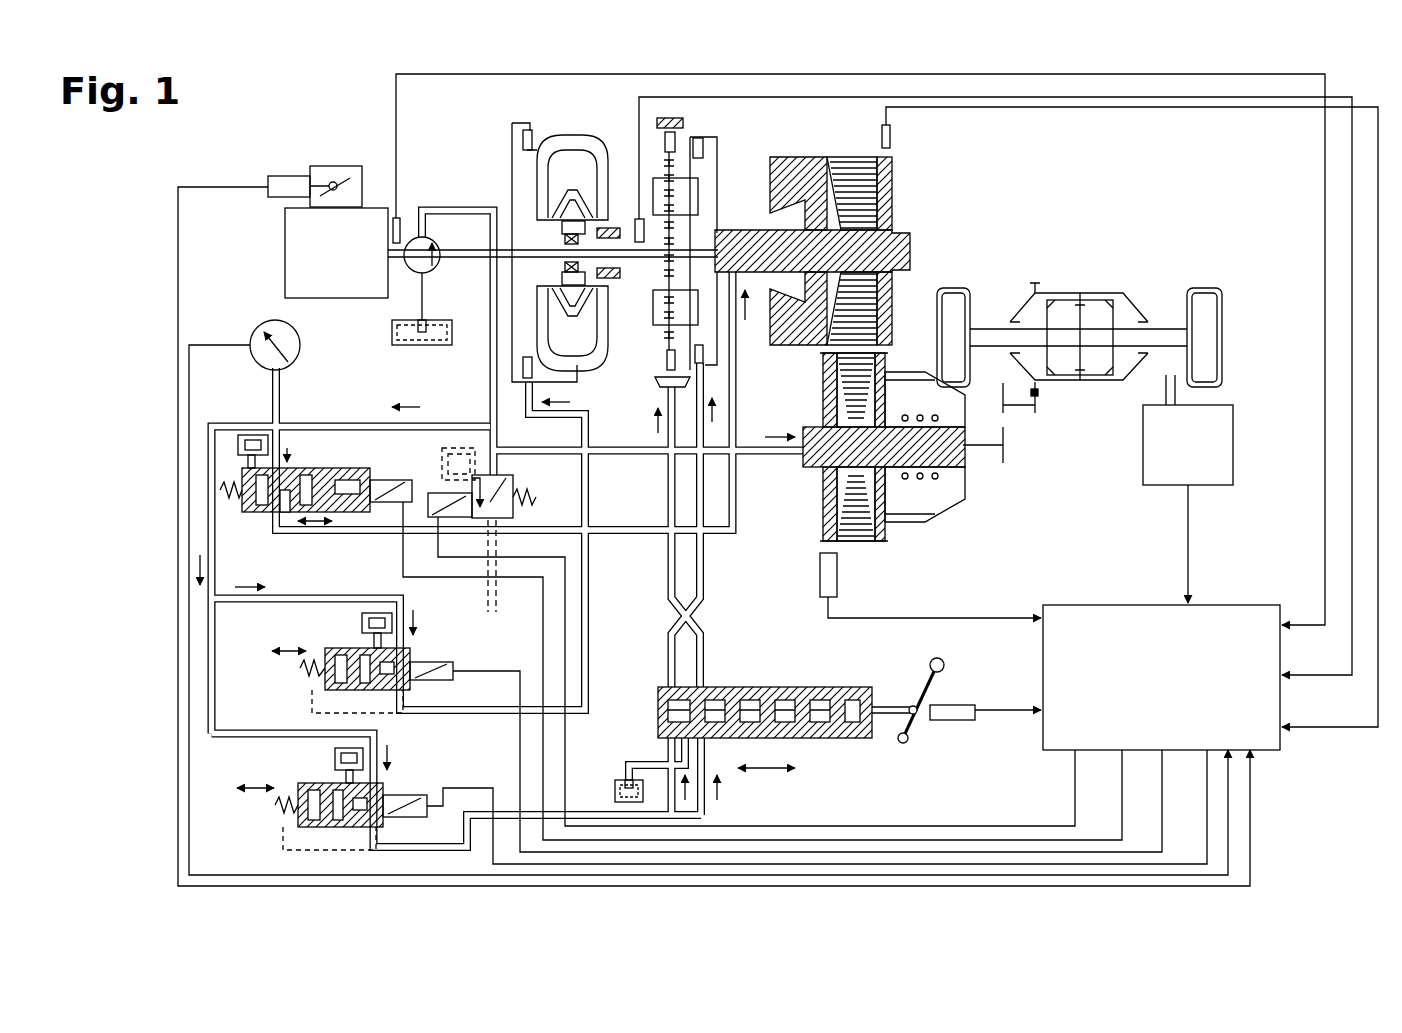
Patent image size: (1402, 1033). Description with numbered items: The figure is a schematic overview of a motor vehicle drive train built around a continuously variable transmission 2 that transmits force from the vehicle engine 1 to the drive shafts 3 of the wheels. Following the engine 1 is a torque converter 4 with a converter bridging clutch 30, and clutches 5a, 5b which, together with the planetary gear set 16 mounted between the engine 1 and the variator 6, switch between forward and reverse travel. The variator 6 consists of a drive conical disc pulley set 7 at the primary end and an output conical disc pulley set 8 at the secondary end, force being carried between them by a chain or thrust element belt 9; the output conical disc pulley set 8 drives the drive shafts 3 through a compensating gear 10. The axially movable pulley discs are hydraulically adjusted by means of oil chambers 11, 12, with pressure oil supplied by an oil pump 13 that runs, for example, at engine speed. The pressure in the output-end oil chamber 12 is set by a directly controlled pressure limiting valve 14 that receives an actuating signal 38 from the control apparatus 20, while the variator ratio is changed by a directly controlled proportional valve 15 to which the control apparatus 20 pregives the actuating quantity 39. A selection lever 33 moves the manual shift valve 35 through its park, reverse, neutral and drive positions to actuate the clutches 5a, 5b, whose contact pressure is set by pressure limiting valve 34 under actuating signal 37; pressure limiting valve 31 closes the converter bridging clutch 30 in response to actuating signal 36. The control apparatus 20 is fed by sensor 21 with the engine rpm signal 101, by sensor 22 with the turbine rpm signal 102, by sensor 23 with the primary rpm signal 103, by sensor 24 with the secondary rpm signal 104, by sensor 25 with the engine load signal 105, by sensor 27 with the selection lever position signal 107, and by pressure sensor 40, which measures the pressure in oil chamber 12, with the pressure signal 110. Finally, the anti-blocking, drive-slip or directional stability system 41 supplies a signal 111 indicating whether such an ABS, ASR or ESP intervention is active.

The vehicle engine 1 is at (312, 245).
The continuously variable transmission 2 is at (995, 210).
The drive shafts 3 is at (990, 330).
The torque converter 4 is at (600, 374).
The clutch 5a is at (704, 155).
The clutch 5b is at (676, 136).
The variator 6 is at (858, 366).
The drive conical disc pulley set 7 is at (895, 232).
The output conical disc pulley set 8 is at (874, 378).
The chain or thrust element belt 9 is at (853, 510).
The compensating gear 10 is at (1050, 398).
The oil chamber 11 is at (790, 212).
The oil chamber 12 is at (932, 508).
The oil pump 13 is at (430, 276).
The pressure limiting valve 14 is at (520, 477).
The proportional valve 15 is at (260, 513).
The planetary gear set 16 is at (645, 320).
The control apparatus 20 is at (1170, 612).
The sensor 21 is at (398, 217).
The sensor 22 is at (638, 219).
The sensor 23 is at (891, 137).
The sensor 24 is at (820, 572).
The sensor 25 is at (287, 175).
The sensor 27 is at (955, 721).
The converter bridging clutch 30 is at (521, 138).
The pressure limiting valve 31 is at (345, 648).
The selection lever 33 is at (933, 688).
The pressure limiting valve 34 is at (300, 785).
The manual shift valve 35 is at (795, 687).
The actuating signal 36 is at (476, 668).
The actuating signal 37 is at (462, 788).
The actuating signal 38 is at (567, 758).
The actuating quantity 39 is at (542, 617).
The pressure sensor 40 is at (300, 345).
The anti-blocking / drive-slip / directional stability system 41 is at (1213, 453).
The engine rpm signal 101 is at (414, 76).
The output rpm signal 102 is at (848, 99).
The primary rpm signal 103 is at (1165, 108).
The secondary rpm signal 104 is at (953, 618).
The load signal 105 is at (207, 186).
The selection lever position signal 107 is at (1005, 712).
The pressure signal 110 is at (220, 344).
The signal 111 is at (1190, 538).